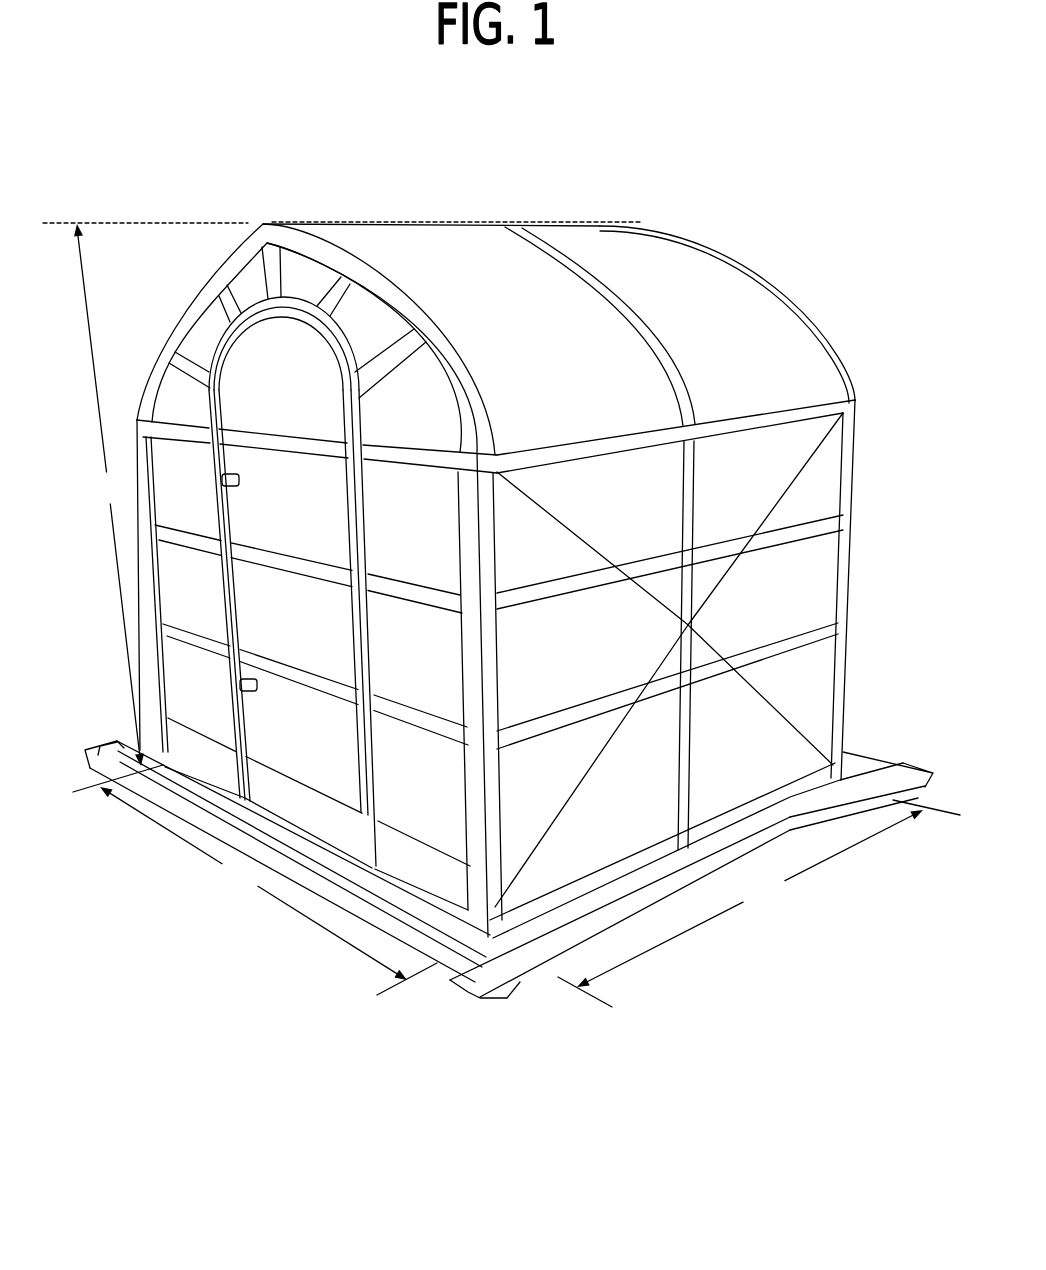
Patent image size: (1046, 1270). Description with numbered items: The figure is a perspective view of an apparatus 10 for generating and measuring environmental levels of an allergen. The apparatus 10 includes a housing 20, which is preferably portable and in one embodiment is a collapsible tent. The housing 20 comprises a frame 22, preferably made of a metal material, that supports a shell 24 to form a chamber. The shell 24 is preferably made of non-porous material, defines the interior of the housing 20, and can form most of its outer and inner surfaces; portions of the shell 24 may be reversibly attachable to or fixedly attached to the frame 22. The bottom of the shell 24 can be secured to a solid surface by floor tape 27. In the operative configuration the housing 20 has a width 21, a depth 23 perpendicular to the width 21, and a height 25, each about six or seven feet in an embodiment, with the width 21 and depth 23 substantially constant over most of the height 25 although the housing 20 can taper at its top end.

The apparatus 10 is at (719, 188).
The housing 20 is at (798, 300).
The width 21 is at (255, 880).
The frame 22 is at (770, 650).
The depth 23 is at (759, 903).
The shell 24 is at (793, 576).
The height 25 is at (341, 494).
The floor tape 27 is at (478, 991).